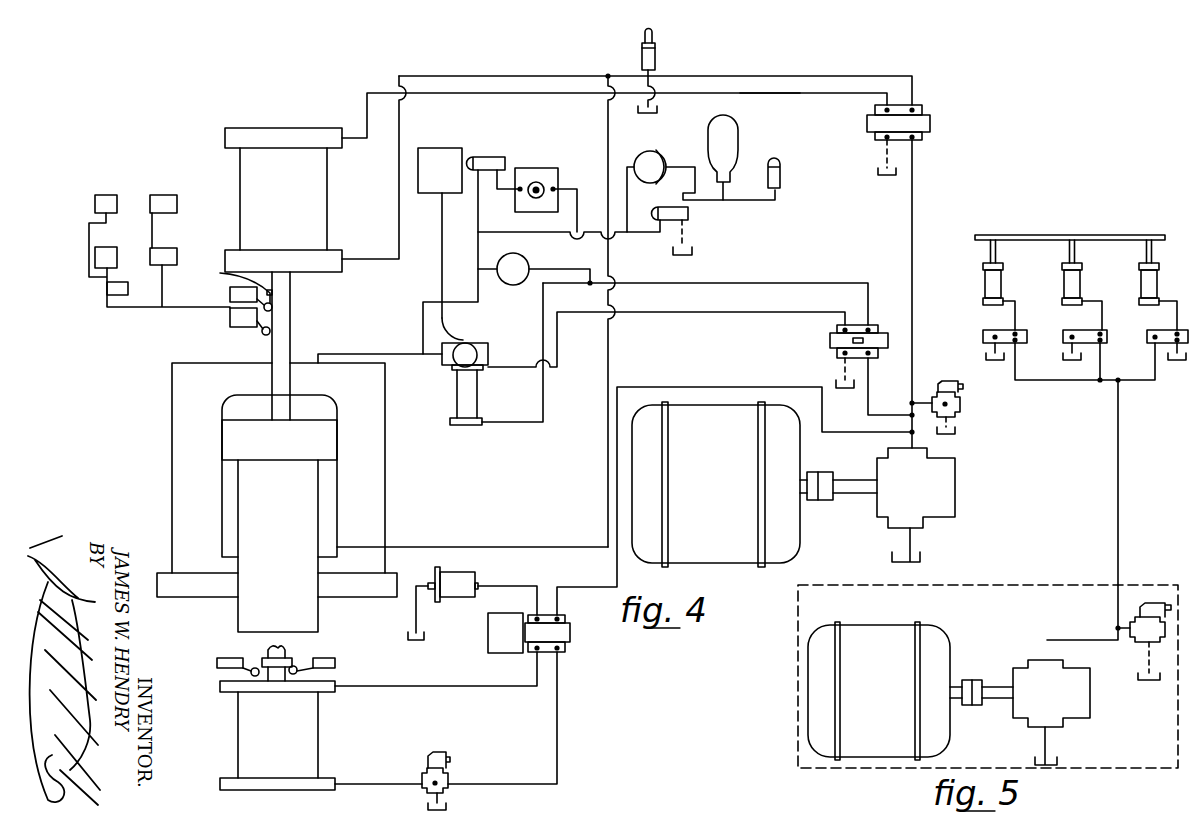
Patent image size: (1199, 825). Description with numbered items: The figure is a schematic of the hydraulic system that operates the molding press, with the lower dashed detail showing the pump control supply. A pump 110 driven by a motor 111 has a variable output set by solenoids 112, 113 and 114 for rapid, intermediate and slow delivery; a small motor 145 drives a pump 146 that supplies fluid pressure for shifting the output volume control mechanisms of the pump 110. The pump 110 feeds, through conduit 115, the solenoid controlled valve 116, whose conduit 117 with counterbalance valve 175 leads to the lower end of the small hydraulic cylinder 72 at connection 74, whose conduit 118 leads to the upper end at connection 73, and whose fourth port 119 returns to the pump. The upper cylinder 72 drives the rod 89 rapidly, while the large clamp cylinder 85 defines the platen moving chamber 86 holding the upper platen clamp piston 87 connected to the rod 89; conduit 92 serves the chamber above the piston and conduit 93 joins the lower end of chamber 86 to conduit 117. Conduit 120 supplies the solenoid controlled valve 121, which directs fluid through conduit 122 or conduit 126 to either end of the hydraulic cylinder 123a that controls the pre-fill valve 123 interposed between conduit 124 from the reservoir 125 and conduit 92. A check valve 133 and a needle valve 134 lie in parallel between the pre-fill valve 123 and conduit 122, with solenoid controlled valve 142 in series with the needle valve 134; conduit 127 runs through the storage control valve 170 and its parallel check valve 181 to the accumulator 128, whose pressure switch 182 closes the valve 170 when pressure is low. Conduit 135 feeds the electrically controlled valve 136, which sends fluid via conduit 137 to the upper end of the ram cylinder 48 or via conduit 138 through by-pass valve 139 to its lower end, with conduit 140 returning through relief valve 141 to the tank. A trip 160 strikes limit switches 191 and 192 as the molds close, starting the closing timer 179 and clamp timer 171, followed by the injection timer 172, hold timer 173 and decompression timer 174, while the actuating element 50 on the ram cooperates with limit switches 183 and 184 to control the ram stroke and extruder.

In FIG. 4, the ram cylinder 48 is at (307, 737).
In FIG. 4, the actuating element 50 is at (295, 658).
In FIG. 4, the hydraulic cylinder 72 is at (250, 177).
In FIG. 4, the connection 73 is at (357, 139).
In FIG. 4, the connection 74 is at (380, 257).
In FIG. 4, the clamp cylinder 85 is at (385, 488).
In FIG. 4, the platen moving chamber 86 is at (327, 412).
In FIG. 4, the upper platen clamp piston 87 is at (279, 526).
In FIG. 4, the rod 89 is at (280, 335).
In FIG. 4, the inlet conduit 92 is at (410, 357).
In FIG. 4, the outlet conduit 93 is at (363, 547).
In FIG. 4, the pump 110 is at (890, 498).
In FIG. 4, the motor 111 is at (707, 479).
In FIG. 4, the solenoid 112 is at (1023, 335).
In FIG. 4, the solenoid 113 is at (1105, 338).
In FIG. 4, the solenoid 114 is at (1145, 333).
In FIG. 4, the conduit 115 is at (914, 222).
In FIG. 4, the solenoid controlled valve 116 is at (877, 122).
In FIG. 4, the conduit 117 is at (815, 76).
In FIG. 4, the conduit 118 is at (760, 93).
In FIG. 4, the fourth port 119 is at (882, 145).
In FIG. 4, the conduit 120 is at (867, 393).
In FIG. 4, the solenoid controlled valve 121 is at (837, 352).
In FIG. 4, the conduit 122 is at (793, 284).
In FIG. 4, the pre-fill valve 123 is at (488, 352).
In FIG. 4, the hydraulic cylinder 123a is at (462, 400).
In FIG. 4, the conduit 124 is at (465, 330).
In FIG. 4, the reservoir 125 is at (450, 148).
In FIG. 4, the conduit 126 is at (662, 313).
In FIG. 4, the conduit 127 is at (620, 231).
In FIG. 4, the accumulator 128 is at (730, 128).
In FIG. 4, the check valve 133 is at (515, 267).
In FIG. 4, the needle valve 134 is at (545, 173).
In FIG. 4, the conduit 135 is at (613, 550).
In FIG. 4, the electrically controlled valve 136 is at (572, 643).
In FIG. 4, the conduit 137 is at (532, 668).
In FIG. 4, the conduit 138 is at (502, 718).
In FIG. 4, the by-pass valve 139 is at (427, 780).
In FIG. 4, the conduit 140 is at (517, 572).
In FIG. 4, the relief valve 141 is at (457, 592).
In FIG. 4, the solenoid controlled valve 142 is at (485, 160).
In FIG. 5, the small motor 145 is at (935, 648).
In FIG. 5, the pump 146 is at (1078, 695).
In FIG. 4, the trip 160 is at (220, 275).
In FIG. 4, the storage control valve 170 is at (680, 215).
In FIG. 4, the clamp timer 171 is at (168, 253).
In FIG. 4, the injection timer 172 is at (105, 253).
In FIG. 4, the hold timer 173 is at (102, 193).
In FIG. 4, the decompression timer 174 is at (177, 208).
In FIG. 4, the counterbalance valve 175 is at (661, 52).
In FIG. 4, the closing timer 179 is at (115, 290).
In FIG. 4, the check valve 181 is at (647, 160).
In FIG. 4, the pressure switch 182 is at (783, 163).
In FIG. 4, the limit switch 183 is at (230, 662).
In FIG. 4, the limit switch 184 is at (335, 662).
In FIG. 4, the limit switch 191 is at (230, 291).
In FIG. 4, the limit switch 192 is at (230, 318).